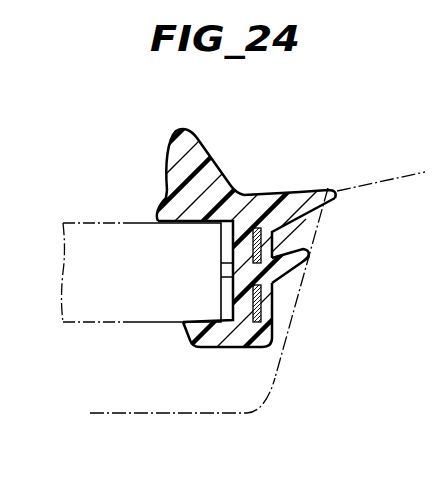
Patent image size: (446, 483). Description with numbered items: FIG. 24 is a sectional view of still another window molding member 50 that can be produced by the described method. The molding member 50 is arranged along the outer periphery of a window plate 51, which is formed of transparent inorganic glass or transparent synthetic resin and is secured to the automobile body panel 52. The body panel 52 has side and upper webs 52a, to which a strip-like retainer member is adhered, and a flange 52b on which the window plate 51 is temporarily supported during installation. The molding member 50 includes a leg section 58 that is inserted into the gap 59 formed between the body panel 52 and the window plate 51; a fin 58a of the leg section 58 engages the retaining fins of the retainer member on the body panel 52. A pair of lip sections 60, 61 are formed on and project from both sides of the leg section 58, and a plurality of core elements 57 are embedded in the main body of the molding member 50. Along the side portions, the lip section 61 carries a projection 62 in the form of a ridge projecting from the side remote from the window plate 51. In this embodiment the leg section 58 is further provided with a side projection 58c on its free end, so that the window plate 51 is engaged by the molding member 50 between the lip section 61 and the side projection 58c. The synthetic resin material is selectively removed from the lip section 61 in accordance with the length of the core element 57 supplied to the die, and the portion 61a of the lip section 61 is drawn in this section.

The window molding member 50 is at (250, 192).
The window plate 51 is at (70, 272).
The automobile body panel 52 is at (398, 174).
The side and upper webs 52a is at (302, 280).
The flange 52b is at (143, 414).
The core element 57 is at (270, 307).
The leg section 58 is at (248, 350).
The fin 58a is at (312, 260).
The side projection 58c is at (193, 350).
The gap 59 is at (290, 232).
The lip section 60 is at (331, 188).
The lip section 61 is at (160, 217).
The seal body surface 61a is at (274, 188).
The projection 62 is at (190, 148).